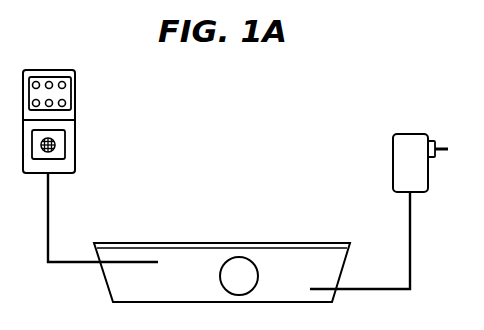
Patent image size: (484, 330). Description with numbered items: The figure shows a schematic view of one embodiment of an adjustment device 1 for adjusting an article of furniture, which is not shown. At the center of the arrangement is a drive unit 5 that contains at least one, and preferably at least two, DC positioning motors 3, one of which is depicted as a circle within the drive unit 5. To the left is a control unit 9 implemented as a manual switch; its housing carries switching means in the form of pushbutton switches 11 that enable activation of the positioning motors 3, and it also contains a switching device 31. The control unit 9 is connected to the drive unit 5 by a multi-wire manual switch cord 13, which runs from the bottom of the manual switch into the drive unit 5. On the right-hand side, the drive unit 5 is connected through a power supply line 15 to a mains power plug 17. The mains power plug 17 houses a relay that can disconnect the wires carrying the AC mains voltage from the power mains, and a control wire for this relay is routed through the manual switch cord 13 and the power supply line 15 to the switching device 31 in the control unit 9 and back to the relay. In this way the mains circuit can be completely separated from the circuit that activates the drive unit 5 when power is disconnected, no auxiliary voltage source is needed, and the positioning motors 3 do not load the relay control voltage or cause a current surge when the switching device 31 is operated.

The adjustment device 1 is at (220, 122).
The DC positioning motor 3 is at (238, 264).
The drive unit 5 is at (168, 243).
The control unit 9 is at (76, 78).
The pushbutton switches 11 is at (68, 105).
The manual switch cord 13 is at (48, 218).
The power supply line 15 is at (410, 230).
The mains power plug 17 is at (393, 161).
The switching device 31 is at (58, 147).